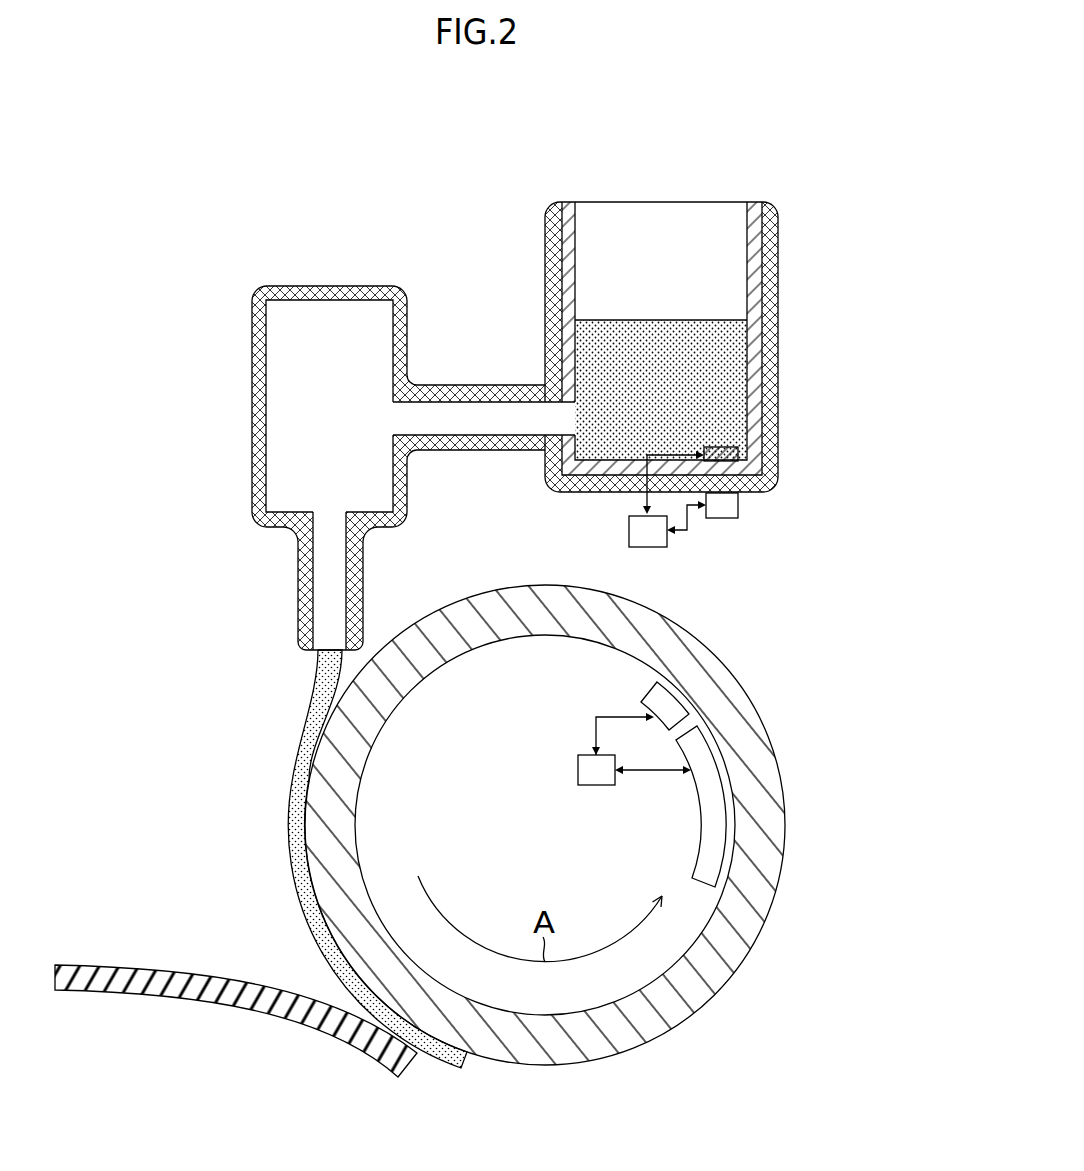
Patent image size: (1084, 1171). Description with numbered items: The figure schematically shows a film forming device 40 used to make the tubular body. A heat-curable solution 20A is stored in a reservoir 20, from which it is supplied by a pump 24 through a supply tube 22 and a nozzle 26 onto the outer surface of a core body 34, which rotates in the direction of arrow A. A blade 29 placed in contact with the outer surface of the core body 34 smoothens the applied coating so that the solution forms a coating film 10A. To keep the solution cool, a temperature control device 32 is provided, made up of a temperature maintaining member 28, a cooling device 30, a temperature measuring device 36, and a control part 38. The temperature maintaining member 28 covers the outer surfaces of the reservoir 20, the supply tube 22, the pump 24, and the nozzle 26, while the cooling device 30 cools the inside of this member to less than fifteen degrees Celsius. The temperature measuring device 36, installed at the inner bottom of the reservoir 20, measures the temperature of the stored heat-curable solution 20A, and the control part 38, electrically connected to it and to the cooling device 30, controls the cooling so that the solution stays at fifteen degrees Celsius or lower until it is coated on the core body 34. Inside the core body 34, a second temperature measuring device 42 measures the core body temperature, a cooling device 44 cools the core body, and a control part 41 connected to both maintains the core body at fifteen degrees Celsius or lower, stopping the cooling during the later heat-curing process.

The film forming device 40 is at (529, 171).
The reservoir 20 is at (527, 635).
The heat-curable solution 20A is at (728, 394).
The coating film 10A is at (301, 727).
The pump 24 is at (252, 354).
The supply tube 22 is at (455, 412).
The temperature maintaining member 28 is at (480, 453).
The nozzle 26 is at (298, 566).
The temperature measuring device 36 is at (738, 453).
The control part 38 is at (629, 530).
The cooling device 30 is at (726, 519).
The temperature control device 32 is at (734, 505).
The core body 34 is at (740, 722).
The temperature measuring device 42 is at (647, 696).
The control part 41 is at (578, 770).
The cooling device 44 is at (701, 843).
The blade 29 is at (157, 991).